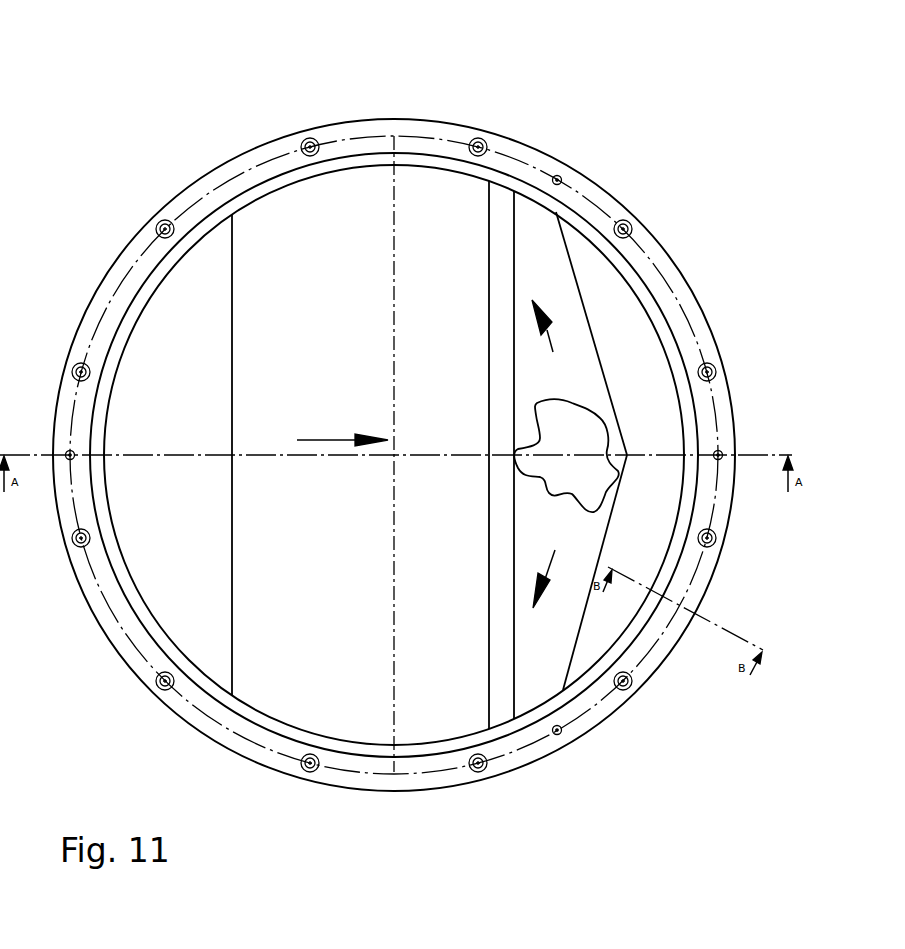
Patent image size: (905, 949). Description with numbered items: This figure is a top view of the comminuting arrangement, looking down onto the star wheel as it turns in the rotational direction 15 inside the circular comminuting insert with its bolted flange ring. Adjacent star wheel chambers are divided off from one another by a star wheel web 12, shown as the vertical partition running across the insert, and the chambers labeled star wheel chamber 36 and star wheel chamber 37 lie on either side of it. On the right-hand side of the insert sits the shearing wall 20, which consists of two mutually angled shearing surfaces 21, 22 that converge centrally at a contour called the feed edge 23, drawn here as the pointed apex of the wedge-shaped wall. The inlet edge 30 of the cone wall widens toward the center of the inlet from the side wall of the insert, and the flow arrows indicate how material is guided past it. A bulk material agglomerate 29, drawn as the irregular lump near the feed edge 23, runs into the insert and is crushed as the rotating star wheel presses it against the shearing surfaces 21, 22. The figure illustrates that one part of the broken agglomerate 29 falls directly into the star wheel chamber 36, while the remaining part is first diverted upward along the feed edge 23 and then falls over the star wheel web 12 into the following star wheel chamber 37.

The star wheel web 12 is at (500, 288).
The rotational direction 15 is at (340, 440).
The shearing wall 20 is at (622, 608).
The shearing surface 21 is at (579, 628).
The shearing surface 22 is at (586, 313).
The feed edge 23 is at (627, 455).
The bulk material agglomerate 29 is at (585, 433).
The inlet edge 30 is at (557, 360).
The star wheel chamber 36 is at (552, 653).
The star wheel chamber 37 is at (273, 245).